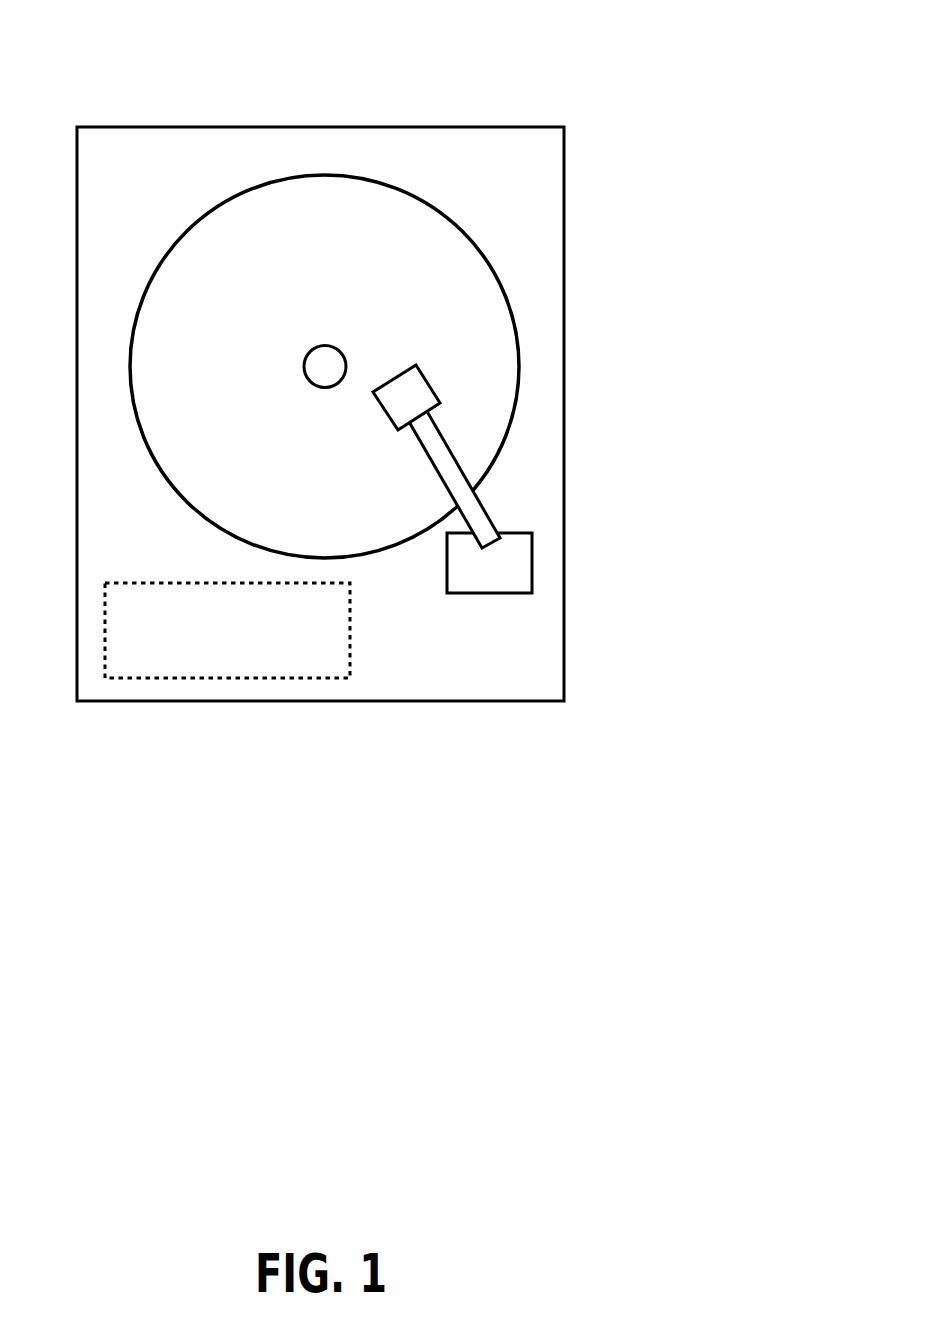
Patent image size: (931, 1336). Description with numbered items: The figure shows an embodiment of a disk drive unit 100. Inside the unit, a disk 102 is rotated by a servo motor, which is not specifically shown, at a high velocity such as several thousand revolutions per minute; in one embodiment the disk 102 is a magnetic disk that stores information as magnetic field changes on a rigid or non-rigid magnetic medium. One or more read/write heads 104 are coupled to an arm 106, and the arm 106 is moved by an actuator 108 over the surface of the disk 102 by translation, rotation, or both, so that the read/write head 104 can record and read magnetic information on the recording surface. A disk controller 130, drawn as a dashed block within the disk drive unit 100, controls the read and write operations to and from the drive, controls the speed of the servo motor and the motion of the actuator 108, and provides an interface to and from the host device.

The disk drive unit 100 is at (581, 52).
The disk 102 is at (200, 217).
The read/write head 104 is at (433, 400).
The arm 106 is at (462, 468).
The actuator 108 is at (446, 582).
The disk controller 130 is at (202, 664).